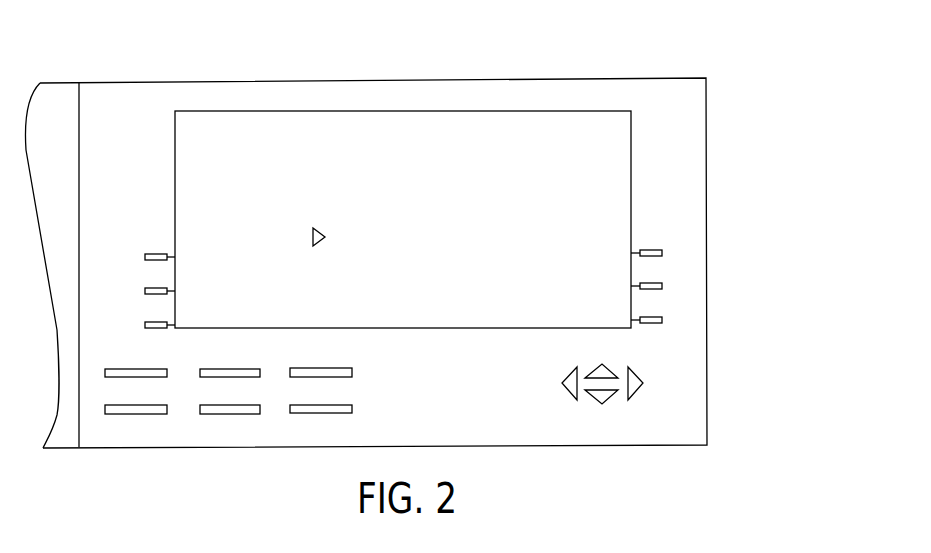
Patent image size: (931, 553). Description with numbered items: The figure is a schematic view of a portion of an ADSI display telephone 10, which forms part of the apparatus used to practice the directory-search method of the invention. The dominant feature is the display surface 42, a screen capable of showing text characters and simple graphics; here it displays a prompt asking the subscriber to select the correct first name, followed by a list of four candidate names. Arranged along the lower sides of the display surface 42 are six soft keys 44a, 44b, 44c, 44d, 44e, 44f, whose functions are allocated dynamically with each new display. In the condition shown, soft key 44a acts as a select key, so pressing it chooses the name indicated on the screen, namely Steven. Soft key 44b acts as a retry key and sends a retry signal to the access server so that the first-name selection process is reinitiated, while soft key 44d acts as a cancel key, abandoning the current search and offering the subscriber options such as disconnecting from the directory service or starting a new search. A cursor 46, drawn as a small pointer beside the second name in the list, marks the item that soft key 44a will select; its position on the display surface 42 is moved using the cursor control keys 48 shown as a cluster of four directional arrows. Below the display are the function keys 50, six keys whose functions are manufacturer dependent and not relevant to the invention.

The ADSI display telephone 10 is at (533, 58).
The display surface 42 is at (632, 139).
The soft key 44a is at (145, 257).
The soft key 44b is at (145, 291).
The soft key 44c is at (145, 325).
The soft key 44d is at (662, 253).
The soft key 44e is at (662, 286).
The soft key 44f is at (662, 320).
The cursor 46 is at (319, 227).
The cursor control keys 48 is at (565, 395).
The function keys 50 is at (362, 371).